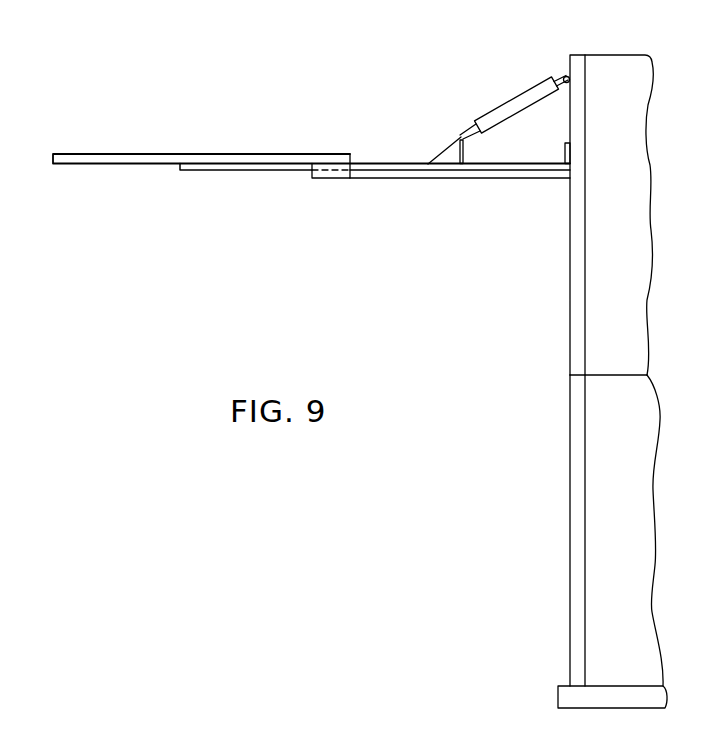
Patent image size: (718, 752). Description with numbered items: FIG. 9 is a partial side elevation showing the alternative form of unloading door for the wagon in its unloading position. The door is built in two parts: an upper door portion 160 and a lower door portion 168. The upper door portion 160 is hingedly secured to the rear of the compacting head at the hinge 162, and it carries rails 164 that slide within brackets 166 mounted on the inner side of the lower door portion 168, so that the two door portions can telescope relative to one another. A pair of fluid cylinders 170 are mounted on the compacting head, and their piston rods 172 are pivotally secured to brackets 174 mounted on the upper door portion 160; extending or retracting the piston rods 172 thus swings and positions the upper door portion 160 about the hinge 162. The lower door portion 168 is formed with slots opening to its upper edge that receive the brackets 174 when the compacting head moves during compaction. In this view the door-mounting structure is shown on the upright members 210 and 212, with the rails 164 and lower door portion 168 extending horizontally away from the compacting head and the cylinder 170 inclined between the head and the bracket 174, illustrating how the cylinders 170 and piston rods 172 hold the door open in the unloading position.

The upper door portion 160 is at (410, 182).
The hinge 162 is at (566, 148).
The rails 164 is at (361, 163).
The brackets 166 is at (320, 182).
The lower door portion 168 is at (157, 155).
The fluid cylinders 170 is at (512, 93).
The piston rods 172 is at (462, 122).
The brackets 174 is at (464, 150).
The upright post 210 is at (654, 492).
The upper post section 212 is at (651, 164).